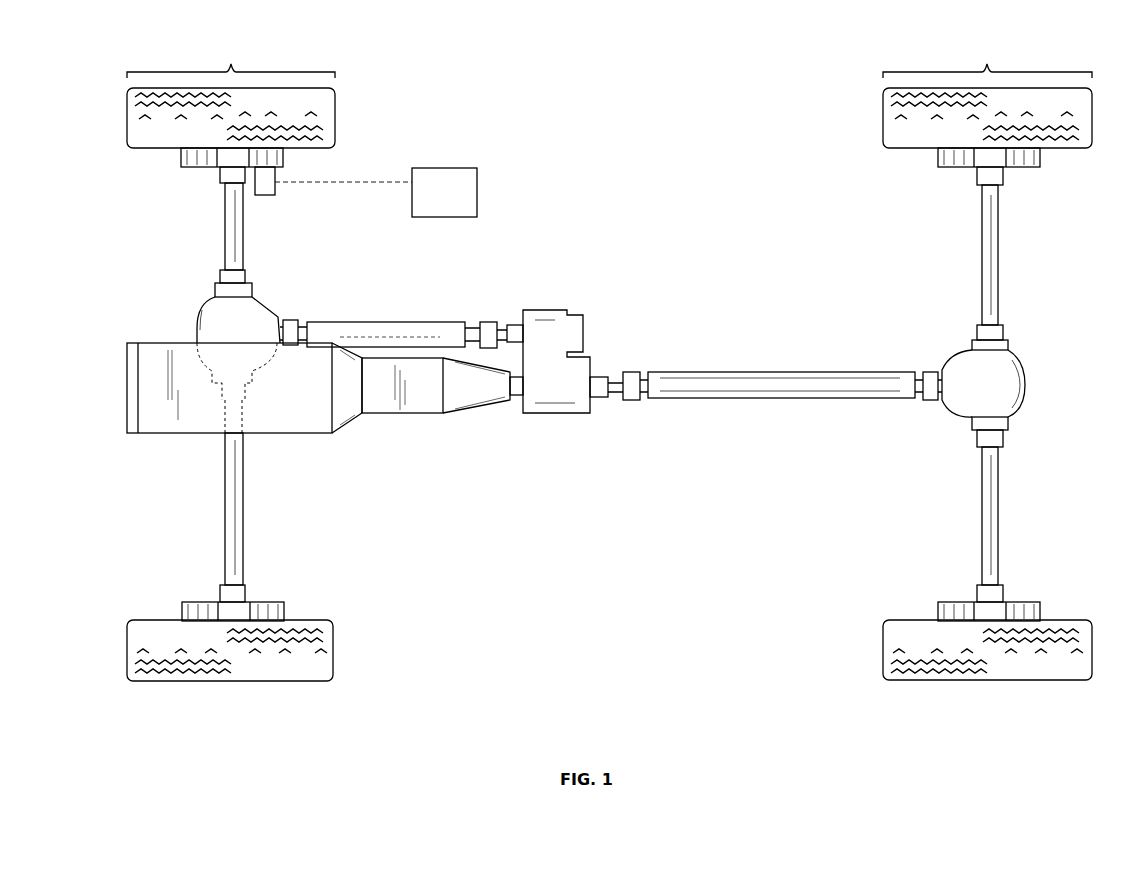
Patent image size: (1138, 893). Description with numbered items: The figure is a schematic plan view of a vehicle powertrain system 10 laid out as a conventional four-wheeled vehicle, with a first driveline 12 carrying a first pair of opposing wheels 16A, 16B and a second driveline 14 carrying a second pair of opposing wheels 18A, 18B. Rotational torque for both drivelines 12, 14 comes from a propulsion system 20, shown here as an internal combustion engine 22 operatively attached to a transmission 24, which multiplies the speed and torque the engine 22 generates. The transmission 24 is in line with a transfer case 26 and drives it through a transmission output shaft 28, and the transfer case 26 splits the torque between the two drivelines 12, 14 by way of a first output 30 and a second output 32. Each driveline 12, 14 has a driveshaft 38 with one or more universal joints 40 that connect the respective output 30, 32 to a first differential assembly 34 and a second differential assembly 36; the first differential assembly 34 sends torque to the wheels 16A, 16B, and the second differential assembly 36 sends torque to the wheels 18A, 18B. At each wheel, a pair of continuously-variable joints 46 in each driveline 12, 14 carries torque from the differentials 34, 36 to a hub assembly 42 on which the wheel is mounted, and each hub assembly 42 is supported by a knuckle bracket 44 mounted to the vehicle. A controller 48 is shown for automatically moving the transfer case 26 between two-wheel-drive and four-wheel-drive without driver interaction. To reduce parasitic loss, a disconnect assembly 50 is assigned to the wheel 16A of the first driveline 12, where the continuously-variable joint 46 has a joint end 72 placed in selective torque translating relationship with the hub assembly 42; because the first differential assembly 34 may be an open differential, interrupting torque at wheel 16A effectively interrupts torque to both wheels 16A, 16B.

The vehicle powertrain system 10 is at (542, 97).
The first driveline 12 is at (231, 57).
The second driveline 14 is at (987, 57).
The wheel 16A is at (327, 105).
The wheel 16B is at (330, 661).
The wheel 18A is at (893, 130).
The wheel 18B is at (883, 650).
The propulsion system 20 is at (318, 422).
The internal combustion engine 22 is at (229, 388).
The transmission 24 is at (336, 440).
The transfer case 26 is at (556, 361).
The transmission output shaft 28 is at (516, 396).
The first output 30 is at (516, 325).
The second output 32 is at (598, 397).
The first differential assembly 34 is at (240, 351).
The second differential assembly 36 is at (981, 386).
The driveshaft 38 is at (387, 322).
The universal joint 40 is at (291, 320).
The hub assembly 42 is at (217, 169).
The knuckle bracket 44 is at (182, 154).
The continuously-variable joint 46 is at (235, 252).
The controller 48 is at (376, 192).
The disconnect assembly 50 is at (267, 178).
The joint end 72 is at (228, 182).